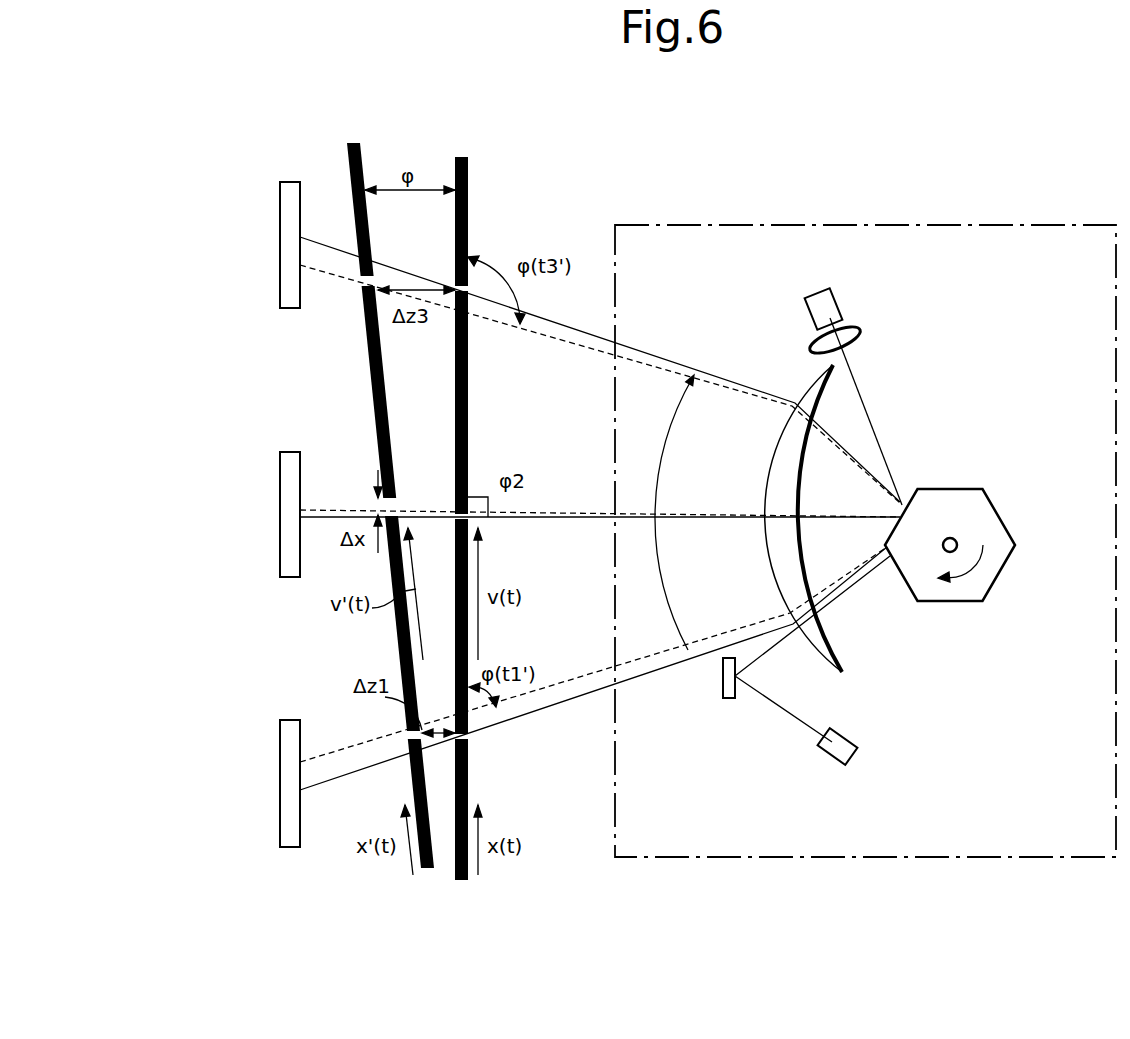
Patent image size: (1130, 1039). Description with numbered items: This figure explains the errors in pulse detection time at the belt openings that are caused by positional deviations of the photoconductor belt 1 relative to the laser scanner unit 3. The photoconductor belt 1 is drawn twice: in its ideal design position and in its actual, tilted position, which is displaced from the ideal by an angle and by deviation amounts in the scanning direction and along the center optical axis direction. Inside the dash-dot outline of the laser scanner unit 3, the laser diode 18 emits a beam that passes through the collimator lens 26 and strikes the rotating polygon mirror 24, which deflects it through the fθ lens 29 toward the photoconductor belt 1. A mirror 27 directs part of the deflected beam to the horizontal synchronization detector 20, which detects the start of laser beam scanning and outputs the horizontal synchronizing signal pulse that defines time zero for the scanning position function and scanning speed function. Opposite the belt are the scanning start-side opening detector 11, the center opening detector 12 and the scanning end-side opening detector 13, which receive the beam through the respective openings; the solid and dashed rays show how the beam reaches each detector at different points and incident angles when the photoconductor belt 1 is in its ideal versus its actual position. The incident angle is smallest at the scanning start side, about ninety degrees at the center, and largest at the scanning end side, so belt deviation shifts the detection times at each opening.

The photoconductor belt 1 is at (360, 152).
The laser scanner unit 3 is at (765, 857).
The scanning start-side opening detector 11 is at (288, 720).
The center opening detector 12 is at (288, 452).
The scanning end-side opening detector 13 is at (287, 182).
The laser diode 18 is at (838, 299).
The horizontal synchronization detector 20 is at (851, 762).
The polygon mirror 24 is at (988, 498).
The collimator lens 26 is at (862, 337).
The mirror 27 is at (722, 688).
The fθ lens 29 is at (843, 660).